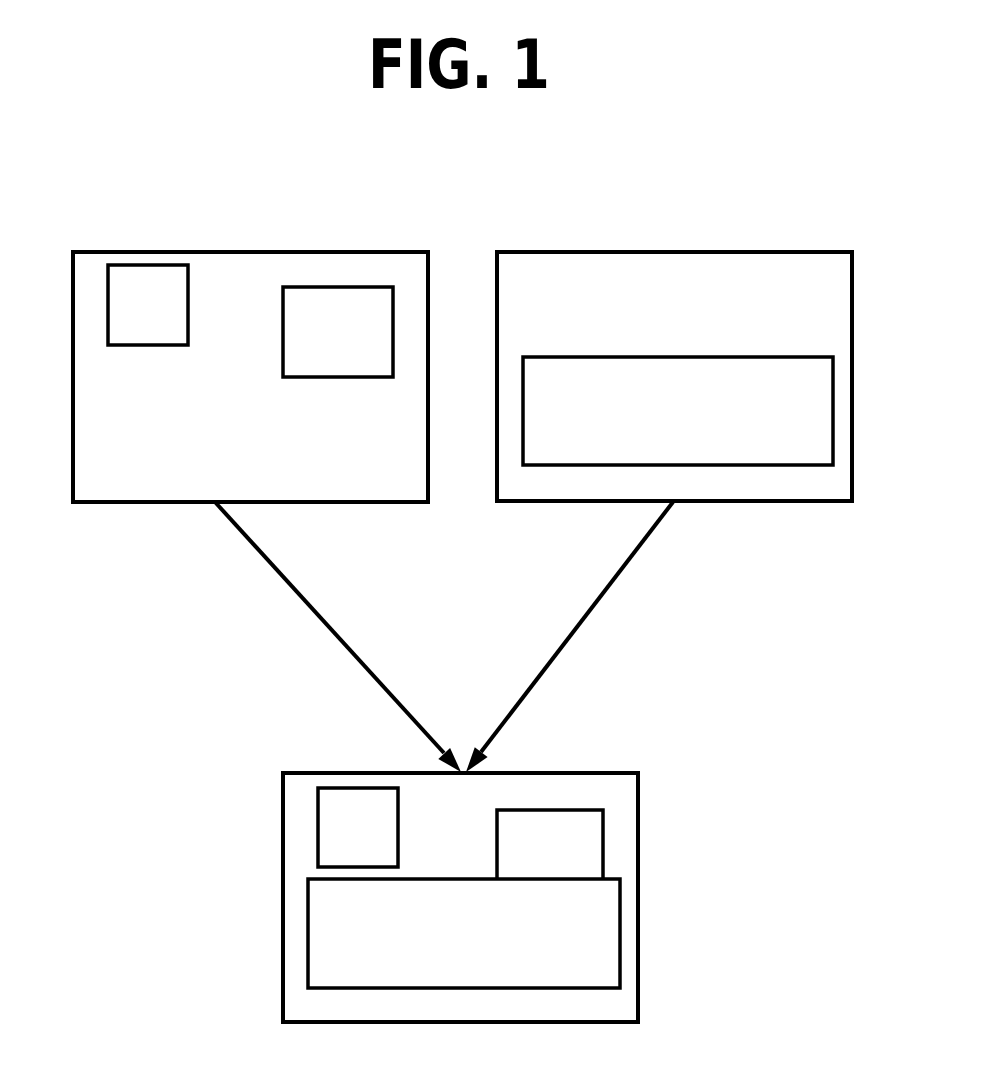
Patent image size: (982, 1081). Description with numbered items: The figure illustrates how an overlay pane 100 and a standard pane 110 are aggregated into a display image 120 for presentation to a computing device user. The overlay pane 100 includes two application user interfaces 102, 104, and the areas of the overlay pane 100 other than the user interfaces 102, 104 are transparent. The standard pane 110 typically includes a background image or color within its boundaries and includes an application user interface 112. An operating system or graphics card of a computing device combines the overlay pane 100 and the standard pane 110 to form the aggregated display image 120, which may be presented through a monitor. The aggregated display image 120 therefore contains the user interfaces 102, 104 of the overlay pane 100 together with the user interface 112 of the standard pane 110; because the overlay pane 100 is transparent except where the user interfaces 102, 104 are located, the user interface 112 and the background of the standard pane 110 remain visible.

The overlay pane 100 is at (90, 252).
The user interface 102 is at (125, 345).
The user interface 104 is at (337, 377).
The standard pane 110 is at (513, 252).
The user interface 112 is at (565, 357).
The aggregated display image 120 is at (638, 808).